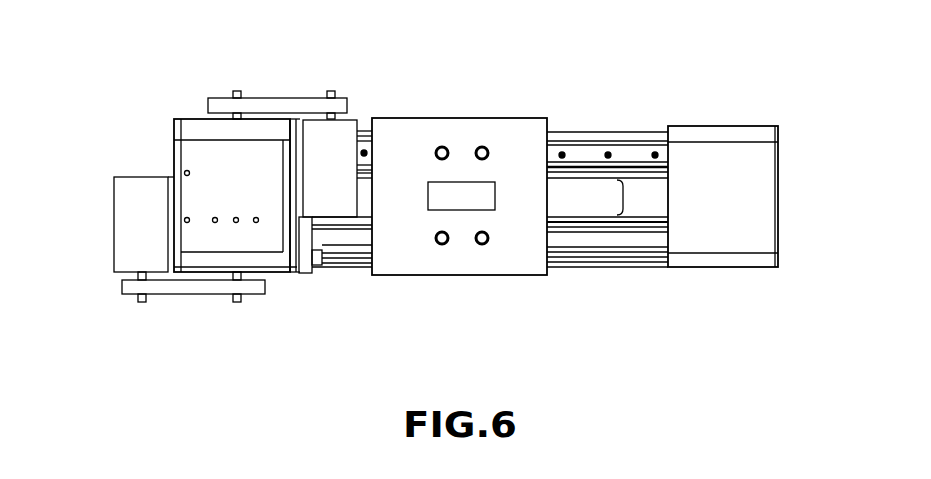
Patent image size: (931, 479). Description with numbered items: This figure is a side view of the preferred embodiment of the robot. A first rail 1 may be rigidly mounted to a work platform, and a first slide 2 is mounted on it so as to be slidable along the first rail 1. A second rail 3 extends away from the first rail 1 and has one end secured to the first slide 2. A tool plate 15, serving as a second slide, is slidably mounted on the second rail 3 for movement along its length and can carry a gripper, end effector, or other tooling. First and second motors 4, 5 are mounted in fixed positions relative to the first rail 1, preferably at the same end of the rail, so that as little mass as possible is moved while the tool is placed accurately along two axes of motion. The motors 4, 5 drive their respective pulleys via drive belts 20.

The first rail 1 is at (174, 135).
The first slide 2 is at (304, 255).
The second rail 3 is at (588, 131).
The first motor 4 is at (348, 138).
The second motor 5 is at (122, 204).
The tool plate 15 is at (452, 132).
The drive belt 20 is at (298, 105).